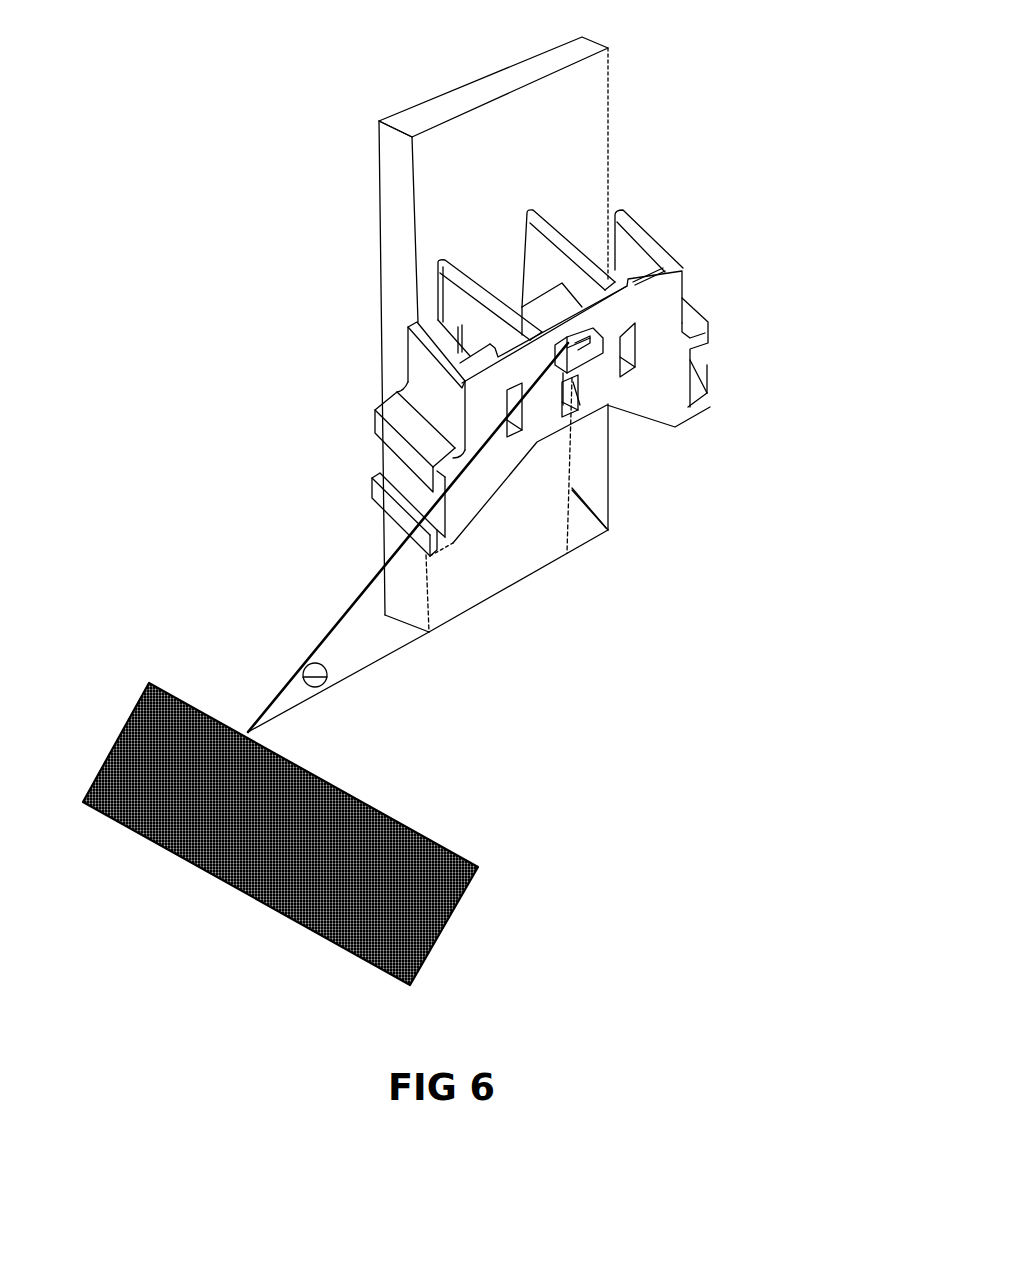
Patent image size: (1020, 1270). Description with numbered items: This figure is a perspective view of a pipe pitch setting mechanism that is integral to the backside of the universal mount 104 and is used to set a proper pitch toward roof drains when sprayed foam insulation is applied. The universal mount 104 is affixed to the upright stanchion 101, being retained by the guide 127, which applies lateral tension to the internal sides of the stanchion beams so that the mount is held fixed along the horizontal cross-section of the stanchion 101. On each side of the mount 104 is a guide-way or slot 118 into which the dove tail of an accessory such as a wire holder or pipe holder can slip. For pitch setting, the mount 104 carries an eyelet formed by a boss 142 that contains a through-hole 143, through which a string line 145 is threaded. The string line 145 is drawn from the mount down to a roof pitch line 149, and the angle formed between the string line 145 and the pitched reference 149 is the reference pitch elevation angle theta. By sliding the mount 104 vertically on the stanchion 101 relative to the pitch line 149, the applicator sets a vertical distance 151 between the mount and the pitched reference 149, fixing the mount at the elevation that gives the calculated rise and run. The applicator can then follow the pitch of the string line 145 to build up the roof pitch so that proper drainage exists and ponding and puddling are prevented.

The stanchion 101 is at (403, 167).
The universal mount 104 is at (655, 188).
The guide 127 is at (555, 232).
The boss 142 is at (555, 343).
The through-hole 143 is at (578, 392).
The string line 145 is at (358, 592).
The pitch line 149 is at (355, 792).
The vertical distance 151 is at (608, 530).
The slot 118 is at (380, 475).